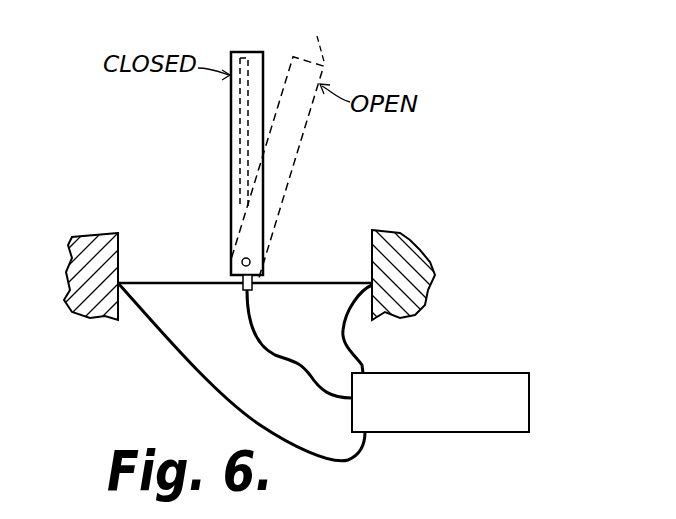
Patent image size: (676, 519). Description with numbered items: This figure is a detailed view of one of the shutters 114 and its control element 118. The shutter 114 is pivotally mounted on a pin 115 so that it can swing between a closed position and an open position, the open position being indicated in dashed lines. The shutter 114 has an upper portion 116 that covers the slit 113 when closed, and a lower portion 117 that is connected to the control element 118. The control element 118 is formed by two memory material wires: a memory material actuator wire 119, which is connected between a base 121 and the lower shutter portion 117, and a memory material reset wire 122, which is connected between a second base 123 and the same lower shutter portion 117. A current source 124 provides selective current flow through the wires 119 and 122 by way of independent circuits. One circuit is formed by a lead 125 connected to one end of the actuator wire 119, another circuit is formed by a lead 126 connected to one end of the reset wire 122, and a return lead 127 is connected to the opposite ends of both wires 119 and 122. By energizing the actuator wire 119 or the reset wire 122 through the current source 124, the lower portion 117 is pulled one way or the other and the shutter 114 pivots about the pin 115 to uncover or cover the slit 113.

The slit 113 is at (240, 133).
The shutter 114 is at (228, 157).
The pin 115 is at (245, 257).
The upper portion 116 is at (253, 52).
The lower portion 117 is at (243, 290).
The control element 118 is at (352, 194).
The memory material actuator wire 119 is at (183, 282).
The base 121 is at (90, 320).
The memory material reset wire 122 is at (297, 283).
The base 123 is at (435, 273).
The current source 124 is at (529, 398).
The lead 125 is at (187, 362).
The lead 126 is at (366, 355).
The return lead 127 is at (257, 328).